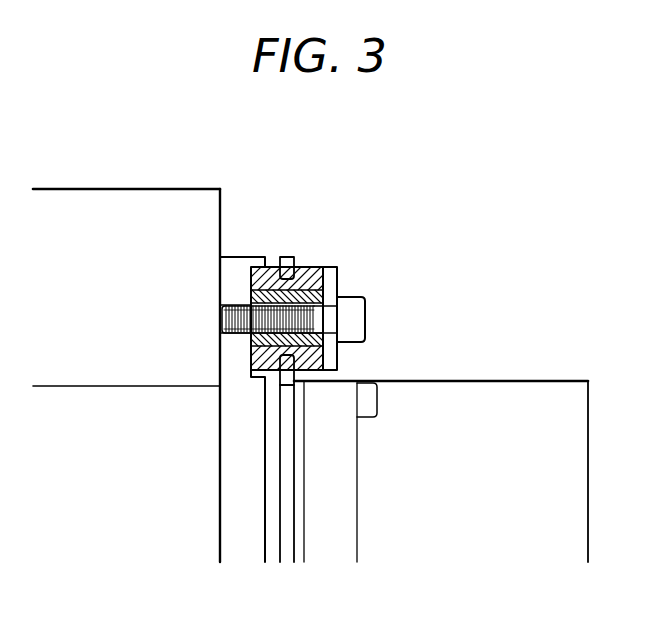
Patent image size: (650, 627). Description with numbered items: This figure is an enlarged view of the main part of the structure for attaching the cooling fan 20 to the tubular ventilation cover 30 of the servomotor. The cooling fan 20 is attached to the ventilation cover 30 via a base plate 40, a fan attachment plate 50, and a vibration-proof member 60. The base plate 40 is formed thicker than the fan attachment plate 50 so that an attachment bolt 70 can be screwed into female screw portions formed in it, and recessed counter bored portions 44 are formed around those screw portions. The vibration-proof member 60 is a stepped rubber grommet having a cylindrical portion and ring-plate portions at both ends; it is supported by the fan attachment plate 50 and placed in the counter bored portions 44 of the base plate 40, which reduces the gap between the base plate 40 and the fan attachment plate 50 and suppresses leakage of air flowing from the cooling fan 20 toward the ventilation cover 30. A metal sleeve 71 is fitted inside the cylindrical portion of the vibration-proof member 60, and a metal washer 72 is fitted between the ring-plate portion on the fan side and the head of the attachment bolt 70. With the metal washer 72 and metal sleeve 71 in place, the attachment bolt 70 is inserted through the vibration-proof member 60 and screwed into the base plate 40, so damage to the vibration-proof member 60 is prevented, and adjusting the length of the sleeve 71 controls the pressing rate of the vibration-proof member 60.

The cooling fan 20 is at (518, 397).
The ventilation cover 30 is at (110, 207).
The base plate 40 is at (240, 267).
The counter bored portion 44 is at (263, 263).
The fan attachment plate 50 is at (290, 266).
The vibration-proof member 60 is at (280, 258).
The attachment bolt 70 is at (366, 318).
The metal sleeve 71 is at (327, 286).
The metal washer 72 is at (335, 282).